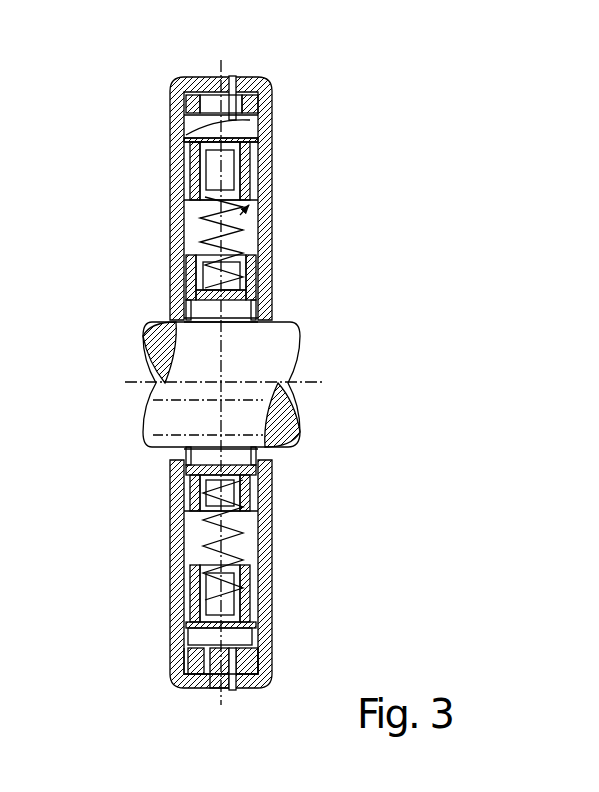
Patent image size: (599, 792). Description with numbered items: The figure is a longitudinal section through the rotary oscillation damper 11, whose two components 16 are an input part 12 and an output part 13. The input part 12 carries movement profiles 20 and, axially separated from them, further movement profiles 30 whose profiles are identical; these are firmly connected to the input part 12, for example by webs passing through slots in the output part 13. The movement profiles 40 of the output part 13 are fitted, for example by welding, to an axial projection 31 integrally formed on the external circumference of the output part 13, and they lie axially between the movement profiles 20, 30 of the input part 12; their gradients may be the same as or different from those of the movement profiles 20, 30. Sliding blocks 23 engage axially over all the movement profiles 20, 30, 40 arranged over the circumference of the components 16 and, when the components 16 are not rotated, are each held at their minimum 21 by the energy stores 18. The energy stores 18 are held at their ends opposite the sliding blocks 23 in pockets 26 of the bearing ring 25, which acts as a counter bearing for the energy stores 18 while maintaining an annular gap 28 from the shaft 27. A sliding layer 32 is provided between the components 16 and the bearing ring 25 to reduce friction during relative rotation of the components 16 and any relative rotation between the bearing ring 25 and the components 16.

The rotary oscillation damper 11 is at (318, 113).
The input part 12 is at (272, 652).
The output part 13 is at (184, 646).
The components 16 is at (168, 78).
The energy stores 18 is at (258, 218).
The movement profiles 20 is at (242, 690).
The minimum 21 is at (200, 124).
The sliding blocks 23 is at (258, 186).
The bearing ring 25 is at (258, 470).
The pockets 26 is at (258, 505).
The shaft 27 is at (268, 369).
The annular gap 28 is at (258, 315).
The further movement profiles 30 is at (189, 690).
The axial projection 31 is at (225, 76).
The sliding layer 32 is at (184, 278).
The movement profiles 40 is at (214, 690).